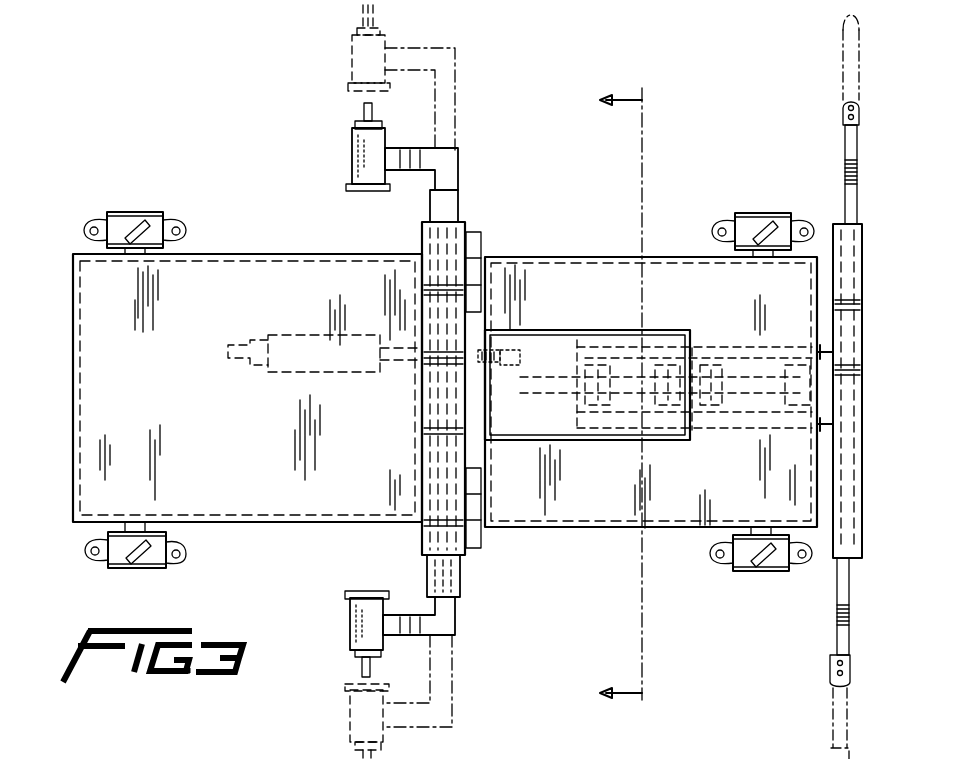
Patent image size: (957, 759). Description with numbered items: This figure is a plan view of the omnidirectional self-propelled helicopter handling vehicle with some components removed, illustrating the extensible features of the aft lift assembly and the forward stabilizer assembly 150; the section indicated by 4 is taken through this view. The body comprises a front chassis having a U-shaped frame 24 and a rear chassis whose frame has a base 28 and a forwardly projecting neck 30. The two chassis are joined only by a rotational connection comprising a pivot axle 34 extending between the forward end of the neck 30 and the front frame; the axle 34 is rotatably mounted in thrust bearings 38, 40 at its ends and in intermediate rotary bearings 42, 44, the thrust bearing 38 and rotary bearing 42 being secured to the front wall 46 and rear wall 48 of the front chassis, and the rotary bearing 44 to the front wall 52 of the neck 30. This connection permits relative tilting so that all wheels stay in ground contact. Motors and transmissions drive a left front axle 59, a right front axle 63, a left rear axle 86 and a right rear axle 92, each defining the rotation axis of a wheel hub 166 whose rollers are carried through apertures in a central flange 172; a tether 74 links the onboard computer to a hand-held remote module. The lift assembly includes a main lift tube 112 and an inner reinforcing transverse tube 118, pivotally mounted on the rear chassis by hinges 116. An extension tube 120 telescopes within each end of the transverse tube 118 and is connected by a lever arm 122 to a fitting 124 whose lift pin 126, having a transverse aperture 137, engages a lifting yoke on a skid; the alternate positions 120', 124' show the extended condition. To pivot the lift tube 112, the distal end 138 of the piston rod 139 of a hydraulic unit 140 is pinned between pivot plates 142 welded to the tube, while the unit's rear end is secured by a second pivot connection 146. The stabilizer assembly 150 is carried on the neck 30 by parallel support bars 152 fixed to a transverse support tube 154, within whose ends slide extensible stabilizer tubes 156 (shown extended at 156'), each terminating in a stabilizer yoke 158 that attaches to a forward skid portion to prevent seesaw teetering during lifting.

The section line 4- 4 is at (611, 397).
The frame 24 is at (690, 528).
The base 28 is at (350, 523).
The neck 30 is at (545, 440).
The pivot axle 34 is at (598, 375).
The thrust bearing 38 is at (790, 372).
The thrust bearing 40 is at (580, 420).
The rotary bearing 42 is at (777, 400).
The rotary bearing 44 is at (665, 380).
The front wall 46 is at (810, 555).
The rear wall 48 is at (705, 420).
The front wall 52 is at (655, 440).
The left front axle 59 is at (750, 251).
The right front axle 63 is at (810, 497).
The tether 74 is at (432, 758).
The left rear axle 86 is at (135, 254).
The right rear axle 92 is at (135, 522).
The main lift tube 112 is at (425, 548).
The hinge 116 is at (482, 245).
The inner reinforcing transverse tube 118 is at (462, 578).
The extension tube 120 is at (473, 395).
The alternate pipe position 120' is at (471, 387).
The lever arm 122 is at (420, 638).
The fitting 124 is at (313, 380).
The alternate cylinder position 124' is at (310, 382).
The lift pin 126 is at (362, 665).
The transverse aperture 137 is at (778, 758).
The distal end 138 is at (500, 358).
The piston rod 139 is at (400, 361).
The hydraulic unit 140 is at (330, 335).
The pivot plate 142 is at (505, 365).
The second pivot connection 146 is at (258, 370).
The stabilizer assembly 150 is at (823, 615).
The support bar 152 is at (818, 352).
The support tube 154 is at (833, 228).
The extensible stabilizer tube 156 is at (797, 386).
The extended rod position 156' is at (808, 57).
The stabilizer yoke 158 is at (840, 113).
The hub 166 is at (120, 212).
The central flange 172 is at (180, 222).